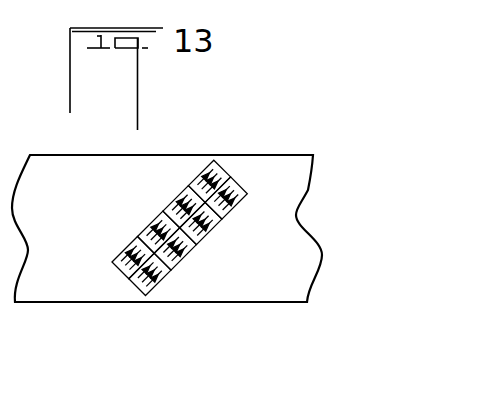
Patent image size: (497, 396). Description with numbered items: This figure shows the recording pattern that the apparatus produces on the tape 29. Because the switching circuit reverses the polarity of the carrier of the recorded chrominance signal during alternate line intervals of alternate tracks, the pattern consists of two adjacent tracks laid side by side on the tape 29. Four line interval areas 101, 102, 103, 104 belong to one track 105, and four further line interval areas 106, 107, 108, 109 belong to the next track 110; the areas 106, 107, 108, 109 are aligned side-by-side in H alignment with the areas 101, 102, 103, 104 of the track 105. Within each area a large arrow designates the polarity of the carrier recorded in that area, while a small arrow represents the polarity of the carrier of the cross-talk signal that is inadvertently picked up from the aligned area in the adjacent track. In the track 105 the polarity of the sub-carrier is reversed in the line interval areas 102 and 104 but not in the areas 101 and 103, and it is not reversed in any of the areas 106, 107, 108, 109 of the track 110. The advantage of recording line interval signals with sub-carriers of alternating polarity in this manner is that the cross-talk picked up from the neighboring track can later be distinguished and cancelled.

The tape 29 is at (97, 303).
The line interval area 101 is at (158, 283).
The line interval area 102 is at (183, 259).
The line interval area 103 is at (211, 230).
The line interval area 104 is at (238, 203).
The track 105 is at (243, 177).
The line interval area 106 is at (119, 255).
The line interval area 107 is at (149, 224).
The line interval area 108 is at (176, 196).
The line interval area 109 is at (201, 171).
The next track 110 is at (228, 160).